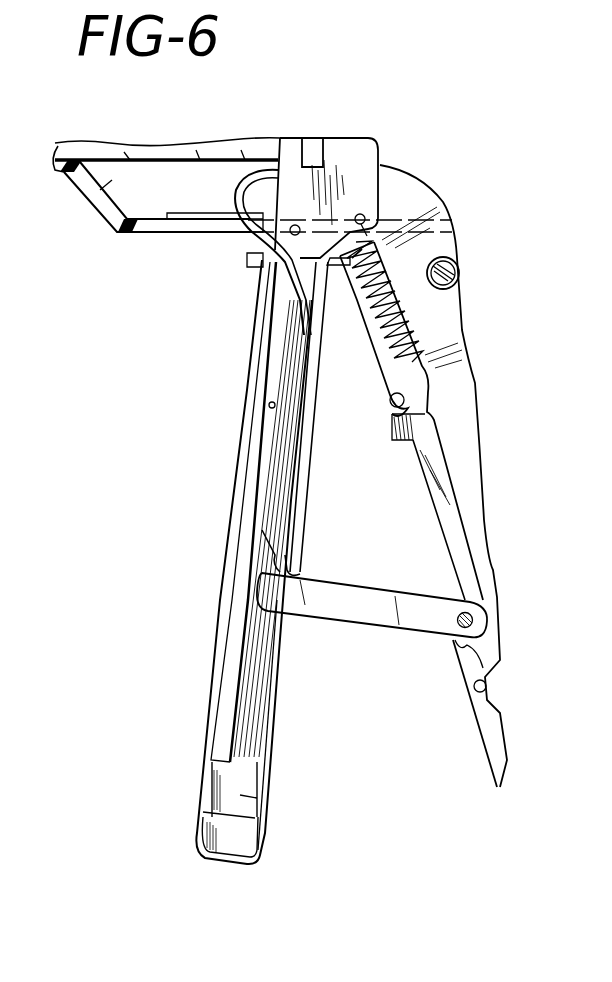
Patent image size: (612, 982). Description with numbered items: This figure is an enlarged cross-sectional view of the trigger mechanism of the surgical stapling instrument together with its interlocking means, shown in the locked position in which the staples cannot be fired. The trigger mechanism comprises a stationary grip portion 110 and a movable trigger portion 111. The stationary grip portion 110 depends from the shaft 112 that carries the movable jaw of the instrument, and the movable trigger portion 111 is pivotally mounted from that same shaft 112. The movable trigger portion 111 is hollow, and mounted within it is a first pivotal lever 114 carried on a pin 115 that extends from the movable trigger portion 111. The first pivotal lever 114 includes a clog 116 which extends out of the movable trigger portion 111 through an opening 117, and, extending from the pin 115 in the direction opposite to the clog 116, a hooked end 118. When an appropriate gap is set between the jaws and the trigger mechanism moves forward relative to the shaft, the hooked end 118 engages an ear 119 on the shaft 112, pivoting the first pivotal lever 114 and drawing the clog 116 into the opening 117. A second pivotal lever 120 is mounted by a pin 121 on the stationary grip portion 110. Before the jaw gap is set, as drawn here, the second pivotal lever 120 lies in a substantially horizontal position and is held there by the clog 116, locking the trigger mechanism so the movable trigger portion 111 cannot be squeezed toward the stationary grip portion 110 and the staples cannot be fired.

The stationary grip portion 110 is at (393, 438).
The movable trigger portion 111 is at (282, 710).
The shaft 112 is at (200, 219).
The first pivotal lever 114 is at (250, 513).
The pin 115 is at (268, 405).
The clog 116 is at (295, 567).
The opening 117 is at (297, 460).
The hooked end 118 is at (233, 237).
The ear 119 is at (148, 232).
The second pivotal lever 120 is at (355, 610).
The pin 121 is at (455, 640).